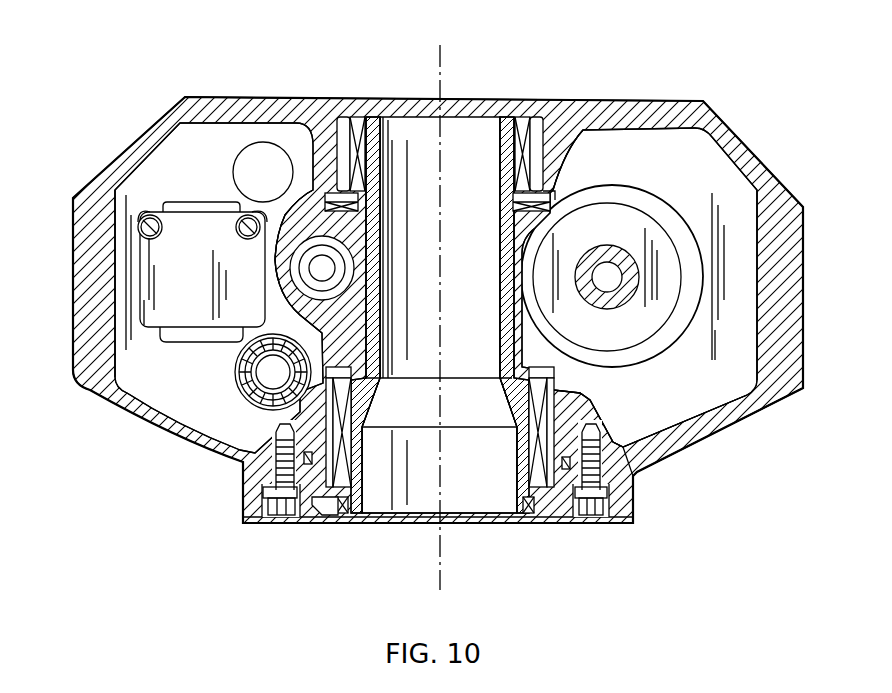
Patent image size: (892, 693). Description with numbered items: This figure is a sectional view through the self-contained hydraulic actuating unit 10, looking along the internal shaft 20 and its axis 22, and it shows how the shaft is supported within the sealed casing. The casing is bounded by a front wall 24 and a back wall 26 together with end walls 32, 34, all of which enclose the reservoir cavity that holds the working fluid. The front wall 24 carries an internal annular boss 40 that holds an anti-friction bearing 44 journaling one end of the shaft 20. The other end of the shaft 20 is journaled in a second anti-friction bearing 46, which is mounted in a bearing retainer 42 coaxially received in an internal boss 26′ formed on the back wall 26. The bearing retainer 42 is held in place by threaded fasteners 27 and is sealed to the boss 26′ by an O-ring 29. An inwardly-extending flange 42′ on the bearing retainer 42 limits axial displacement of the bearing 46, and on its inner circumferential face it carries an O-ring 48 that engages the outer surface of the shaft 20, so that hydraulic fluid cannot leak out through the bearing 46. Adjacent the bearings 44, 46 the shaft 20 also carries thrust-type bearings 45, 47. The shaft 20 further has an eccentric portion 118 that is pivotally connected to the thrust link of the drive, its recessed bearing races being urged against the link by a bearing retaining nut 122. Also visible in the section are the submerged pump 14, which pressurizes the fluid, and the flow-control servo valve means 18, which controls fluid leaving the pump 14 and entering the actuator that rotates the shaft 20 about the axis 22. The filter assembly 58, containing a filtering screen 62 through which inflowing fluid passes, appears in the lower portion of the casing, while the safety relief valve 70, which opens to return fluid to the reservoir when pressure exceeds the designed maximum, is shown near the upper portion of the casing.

The hydraulic actuating unit 10 is at (744, 93).
The submerged pump 14 is at (602, 247).
The flow-control servo valve means 18 is at (192, 263).
The internal shaft 20 is at (480, 244).
The axis 22 is at (445, 62).
The front wall 24 is at (616, 108).
The back wall 26 is at (663, 453).
The internal boss 26′ is at (593, 417).
The threaded fasteners 27 is at (260, 521).
The O-ring 29 is at (565, 463).
The end wall 32 is at (790, 302).
The end wall 34 is at (78, 358).
The internal annular boss 40 is at (551, 156).
The bearing retainer 42 is at (310, 510).
The inwardly-extending flange 42′ is at (325, 517).
The anti-friction bearing 44 is at (528, 118).
The thrust-type bearing 45 is at (550, 205).
The anti-friction bearing 46 is at (530, 441).
The thrust-type bearing 47 is at (500, 380).
The O-ring 48 is at (518, 508).
The filter assembly 58 is at (258, 398).
The screen 62 is at (292, 387).
The safety relief valve 70 is at (244, 158).
The eccentric portion 118 is at (293, 298).
The bearing retaining nut 122 is at (293, 270).